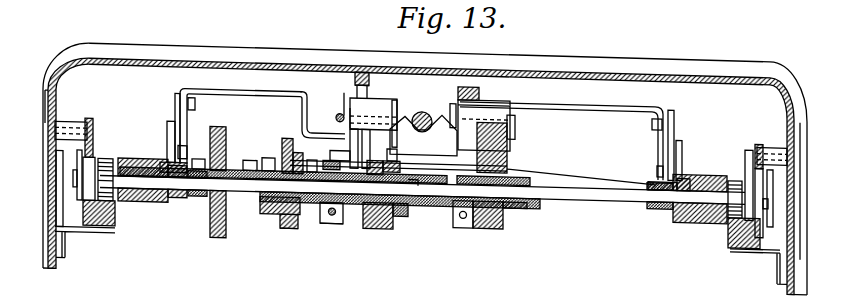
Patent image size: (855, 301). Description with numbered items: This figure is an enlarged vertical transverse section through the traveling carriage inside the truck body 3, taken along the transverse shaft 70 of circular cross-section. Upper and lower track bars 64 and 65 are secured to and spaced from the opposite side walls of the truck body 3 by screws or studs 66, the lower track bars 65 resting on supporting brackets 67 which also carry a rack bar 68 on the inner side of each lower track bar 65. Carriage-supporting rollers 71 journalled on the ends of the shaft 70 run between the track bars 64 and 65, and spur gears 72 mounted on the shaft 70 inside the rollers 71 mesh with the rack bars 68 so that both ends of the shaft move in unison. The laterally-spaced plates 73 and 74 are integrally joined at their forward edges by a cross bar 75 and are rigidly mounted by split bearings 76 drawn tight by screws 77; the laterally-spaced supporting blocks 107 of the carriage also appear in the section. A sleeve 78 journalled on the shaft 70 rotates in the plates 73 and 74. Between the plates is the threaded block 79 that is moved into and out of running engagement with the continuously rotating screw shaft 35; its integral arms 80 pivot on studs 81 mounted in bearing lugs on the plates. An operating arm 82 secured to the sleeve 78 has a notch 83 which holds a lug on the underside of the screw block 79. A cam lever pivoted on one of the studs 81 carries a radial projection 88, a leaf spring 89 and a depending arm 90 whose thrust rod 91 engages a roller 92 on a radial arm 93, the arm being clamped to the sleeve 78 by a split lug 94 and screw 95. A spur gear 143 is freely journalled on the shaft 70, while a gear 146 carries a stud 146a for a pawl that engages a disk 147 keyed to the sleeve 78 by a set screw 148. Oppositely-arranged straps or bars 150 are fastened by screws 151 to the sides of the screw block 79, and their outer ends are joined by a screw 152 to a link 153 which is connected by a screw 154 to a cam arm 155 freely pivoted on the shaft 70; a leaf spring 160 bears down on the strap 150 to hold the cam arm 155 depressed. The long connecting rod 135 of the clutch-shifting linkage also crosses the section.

The housing 3 is at (702, 70).
The screw shaft 35 is at (423, 112).
The upper track bars 64 is at (88, 127).
The lower track bars 65 is at (79, 226).
The screws or studs 66 is at (47, 98).
The supporting brackets 67 is at (100, 241).
The rack bar 68 is at (108, 215).
The shaft 70 is at (602, 197).
The carriage-supporting rollers 71 is at (90, 165).
The spur gears 72 is at (108, 167).
The plate 73 is at (494, 228).
The plate 74 is at (390, 231).
The cross bar 75 is at (507, 166).
The split bearings 76 is at (463, 228).
The screws 77 is at (375, 231).
The sleeve 78 is at (270, 219).
The threaded block 79 is at (423, 135).
The arms 80 is at (394, 101).
The studs 81 is at (350, 110).
The operating arm 82 is at (412, 182).
The notch 83 is at (399, 144).
The radial projection 88 is at (362, 73).
The leaf spring 89 is at (355, 78).
The depending arm 90 is at (356, 200).
The thrust rod 91 is at (338, 134).
The roller 92 is at (332, 218).
The radial arm 93 is at (332, 162).
The split lug 94 is at (326, 228).
The screw 95 is at (318, 226).
The supporting blocks 107 is at (155, 210).
The connecting rod 135 is at (338, 116).
The spur gear 143 is at (216, 240).
The gear 146 is at (281, 227).
The stud 146a is at (282, 150).
The disk 147 is at (290, 233).
The set screw 148 is at (300, 95).
The straps or bars 150 is at (230, 95).
The screws 151 is at (527, 137).
The screw 152 is at (196, 110).
The link 153 is at (178, 100).
The screw 154 is at (188, 158).
The cam arm 155 is at (170, 128).
The leaf spring 160 is at (480, 91).